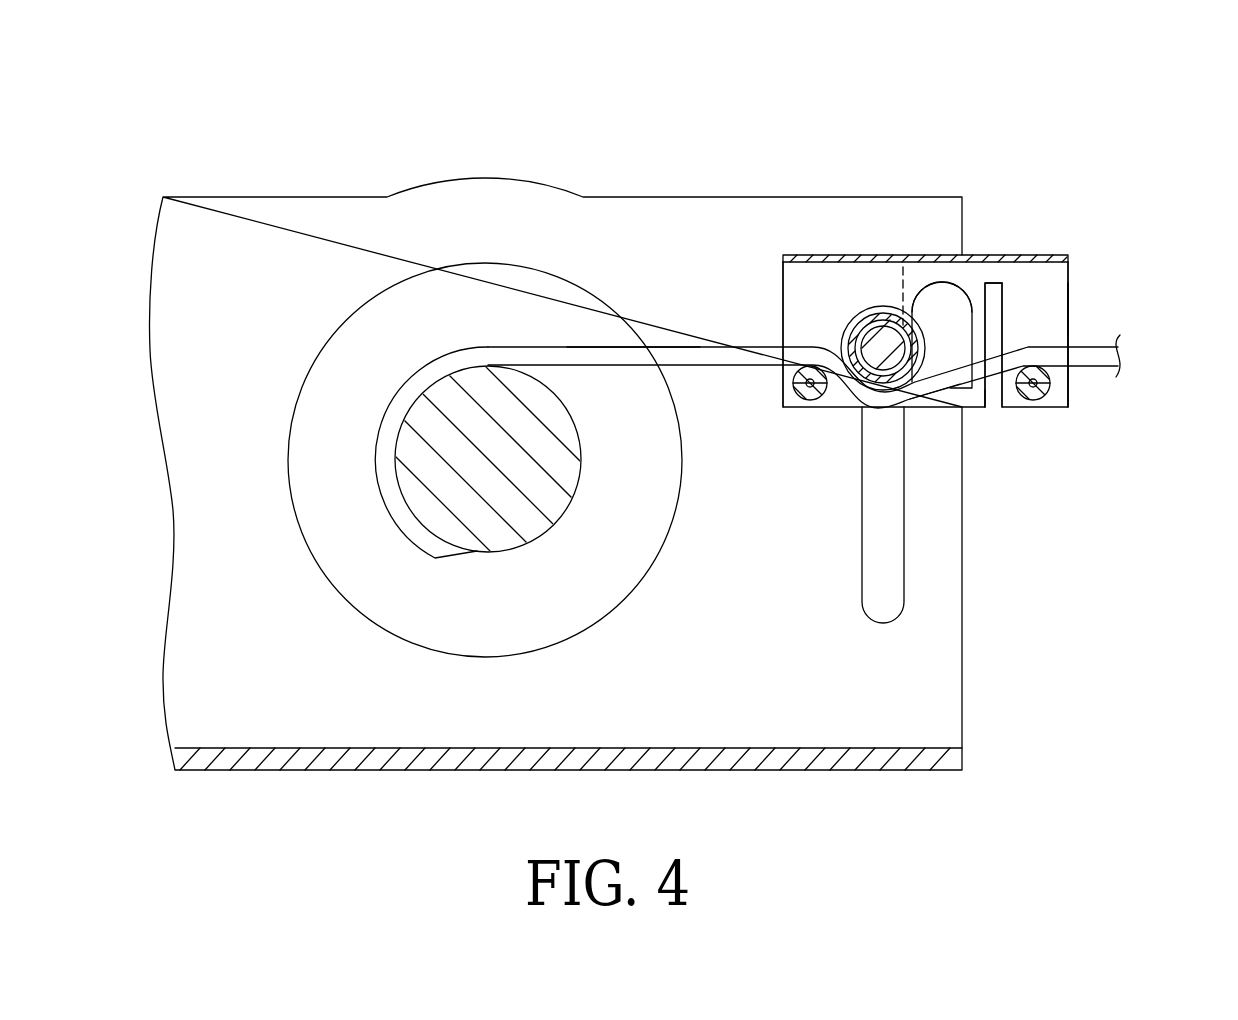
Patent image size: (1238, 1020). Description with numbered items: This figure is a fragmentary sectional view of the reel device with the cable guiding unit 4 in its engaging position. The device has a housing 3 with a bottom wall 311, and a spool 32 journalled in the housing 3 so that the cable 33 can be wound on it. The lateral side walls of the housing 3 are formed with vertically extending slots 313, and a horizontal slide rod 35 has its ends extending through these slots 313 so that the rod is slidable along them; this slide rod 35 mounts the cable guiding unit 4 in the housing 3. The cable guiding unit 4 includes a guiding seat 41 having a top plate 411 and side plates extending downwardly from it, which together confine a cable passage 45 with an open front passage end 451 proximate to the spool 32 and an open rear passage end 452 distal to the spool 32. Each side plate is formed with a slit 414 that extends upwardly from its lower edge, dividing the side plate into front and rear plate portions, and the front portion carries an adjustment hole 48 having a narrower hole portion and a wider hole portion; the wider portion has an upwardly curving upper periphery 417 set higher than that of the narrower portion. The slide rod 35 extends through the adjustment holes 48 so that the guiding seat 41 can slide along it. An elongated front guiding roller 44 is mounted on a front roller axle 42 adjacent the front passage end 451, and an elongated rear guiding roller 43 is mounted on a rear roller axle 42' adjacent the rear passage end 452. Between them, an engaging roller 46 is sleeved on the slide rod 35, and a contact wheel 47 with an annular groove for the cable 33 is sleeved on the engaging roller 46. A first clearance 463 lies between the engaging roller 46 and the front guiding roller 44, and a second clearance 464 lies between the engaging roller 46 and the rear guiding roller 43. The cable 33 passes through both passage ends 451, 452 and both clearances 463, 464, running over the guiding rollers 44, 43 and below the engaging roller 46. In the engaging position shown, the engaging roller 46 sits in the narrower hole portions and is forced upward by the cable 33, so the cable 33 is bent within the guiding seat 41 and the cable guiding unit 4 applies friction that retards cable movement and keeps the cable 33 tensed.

The housing 3 is at (261, 197).
The bottom wall 311 is at (905, 770).
The vertically extending slot 313 is at (902, 584).
The spool 32 is at (492, 427).
The cable 33 is at (567, 345).
The horizontal slide rod 35 is at (918, 395).
The cable guiding unit 4 is at (1093, 322).
The guiding seat 41 is at (970, 243).
The top plate 411 is at (985, 258).
The slit 414 is at (1003, 332).
The upper periphery of wider hole portion 417 is at (932, 282).
The front roller axle 42 is at (747, 460).
The rear roller axle 42' is at (1090, 430).
The rear guiding roller 43 is at (1045, 398).
The front guiding roller 44 is at (790, 380).
The cable passage 45 is at (1035, 305).
The front passage end 451 is at (782, 297).
The rear passage end 452 is at (1068, 315).
The engaging roller 46 is at (873, 330).
The contact wheel 47 is at (883, 312).
The adjustment hole 48 is at (947, 327).
The first clearance 463 is at (837, 400).
The second clearance 464 is at (975, 397).